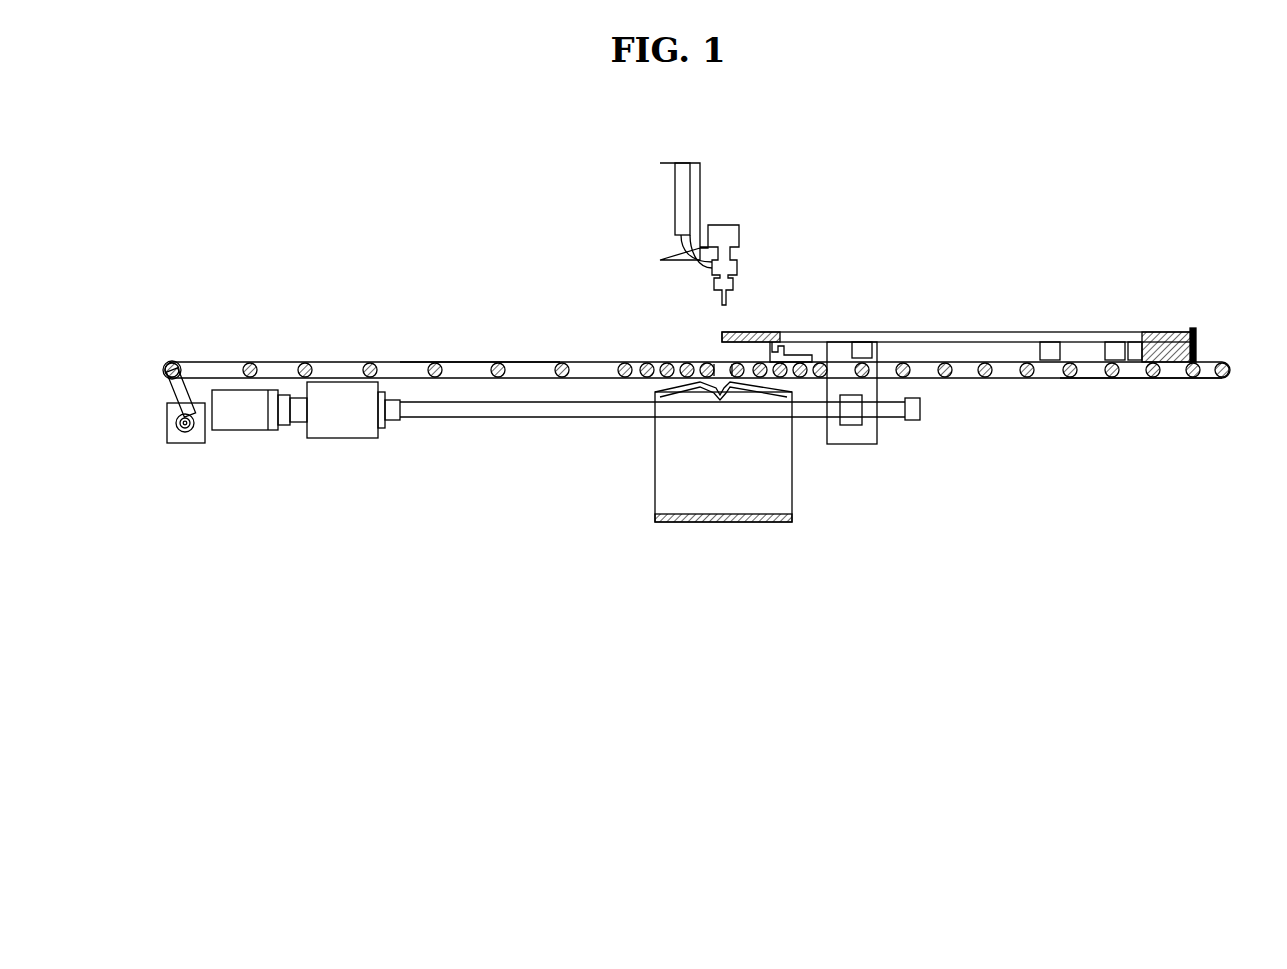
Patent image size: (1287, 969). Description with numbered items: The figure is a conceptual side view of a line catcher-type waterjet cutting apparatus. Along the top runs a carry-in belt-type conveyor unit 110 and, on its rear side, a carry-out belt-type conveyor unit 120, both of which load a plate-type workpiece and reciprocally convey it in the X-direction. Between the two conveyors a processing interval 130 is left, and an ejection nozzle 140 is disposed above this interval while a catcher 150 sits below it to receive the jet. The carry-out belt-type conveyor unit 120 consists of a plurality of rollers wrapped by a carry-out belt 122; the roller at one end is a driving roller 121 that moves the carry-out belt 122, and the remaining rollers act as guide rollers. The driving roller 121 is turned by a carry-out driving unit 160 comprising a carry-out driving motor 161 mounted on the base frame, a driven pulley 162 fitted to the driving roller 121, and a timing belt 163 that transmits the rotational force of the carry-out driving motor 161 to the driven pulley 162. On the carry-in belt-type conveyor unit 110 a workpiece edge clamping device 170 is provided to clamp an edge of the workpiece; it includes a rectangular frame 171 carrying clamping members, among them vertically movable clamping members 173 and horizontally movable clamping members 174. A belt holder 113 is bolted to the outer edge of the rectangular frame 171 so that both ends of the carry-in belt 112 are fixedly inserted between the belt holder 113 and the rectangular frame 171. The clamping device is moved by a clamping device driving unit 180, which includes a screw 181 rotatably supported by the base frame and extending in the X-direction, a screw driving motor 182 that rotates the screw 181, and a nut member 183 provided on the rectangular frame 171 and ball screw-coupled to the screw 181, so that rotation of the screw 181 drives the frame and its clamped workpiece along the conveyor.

The carry-in belt-type conveyor unit 110 is at (1010, 383).
The carry-in belt 112 is at (1135, 381).
The belt holder 113 is at (1195, 340).
The carry-out belt-type conveyor unit 120 is at (346, 356).
The driving roller 121 is at (165, 360).
The carry-out belt 122 is at (478, 360).
The processing interval 130 is at (723, 368).
The ejection nozzle 140 is at (722, 302).
The catcher 150 is at (655, 466).
The carry-out driving unit 160 is at (151, 458).
The carry-out driving motor 161 is at (187, 488).
The driven pulley 162 is at (165, 374).
The timing belt 163 is at (167, 402).
The workpiece edge clamping device 170 is at (958, 294).
The rectangular frame 171 is at (893, 340).
The vertically movable clamping members 173 is at (795, 350).
The horizontally movable clamping members 174 is at (1048, 352).
The clamping device driving unit 180 is at (566, 515).
The screw 181 is at (472, 412).
The screw driving motor 182 is at (255, 420).
The nut member 183 is at (856, 468).